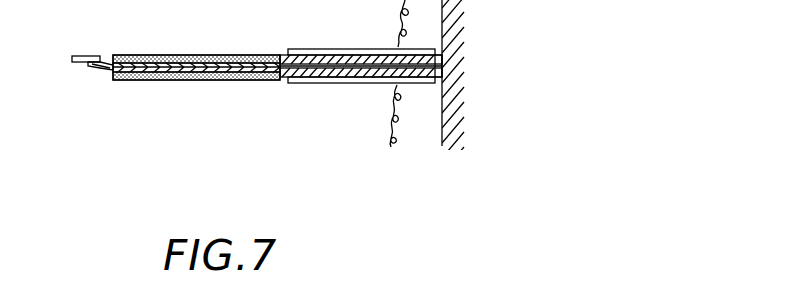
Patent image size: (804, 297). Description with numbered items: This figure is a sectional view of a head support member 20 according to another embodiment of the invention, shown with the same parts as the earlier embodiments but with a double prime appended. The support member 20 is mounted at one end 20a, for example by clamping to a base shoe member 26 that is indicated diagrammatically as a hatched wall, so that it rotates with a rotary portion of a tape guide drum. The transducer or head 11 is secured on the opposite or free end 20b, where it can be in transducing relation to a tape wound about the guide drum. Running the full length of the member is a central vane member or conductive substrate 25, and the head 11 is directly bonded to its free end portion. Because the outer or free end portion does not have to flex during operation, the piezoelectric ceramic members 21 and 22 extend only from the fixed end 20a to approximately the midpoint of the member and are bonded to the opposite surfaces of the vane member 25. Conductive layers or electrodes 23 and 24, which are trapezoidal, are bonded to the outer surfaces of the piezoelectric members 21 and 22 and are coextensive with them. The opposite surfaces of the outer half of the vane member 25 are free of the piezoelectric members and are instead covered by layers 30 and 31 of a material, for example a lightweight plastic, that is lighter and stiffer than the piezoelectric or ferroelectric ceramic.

The transducer or head 11 is at (72, 59).
The head support member 20 is at (228, 47).
The fixed end of support member 20a is at (444, 72).
The free end of support member 20b is at (113, 72).
The piezoelectric ceramic member 21 is at (352, 58).
The piezoelectric ceramic member 22 is at (347, 76).
The conductive layer or electrode 23 is at (318, 49).
The conductive layer or electrode 24 is at (302, 86).
The central vane member or conductive substrate 25 is at (191, 72).
The base shoe member 26 is at (452, 103).
The layer of lightweight plastic 30 is at (148, 55).
The layer of lightweight plastic 31 is at (145, 74).